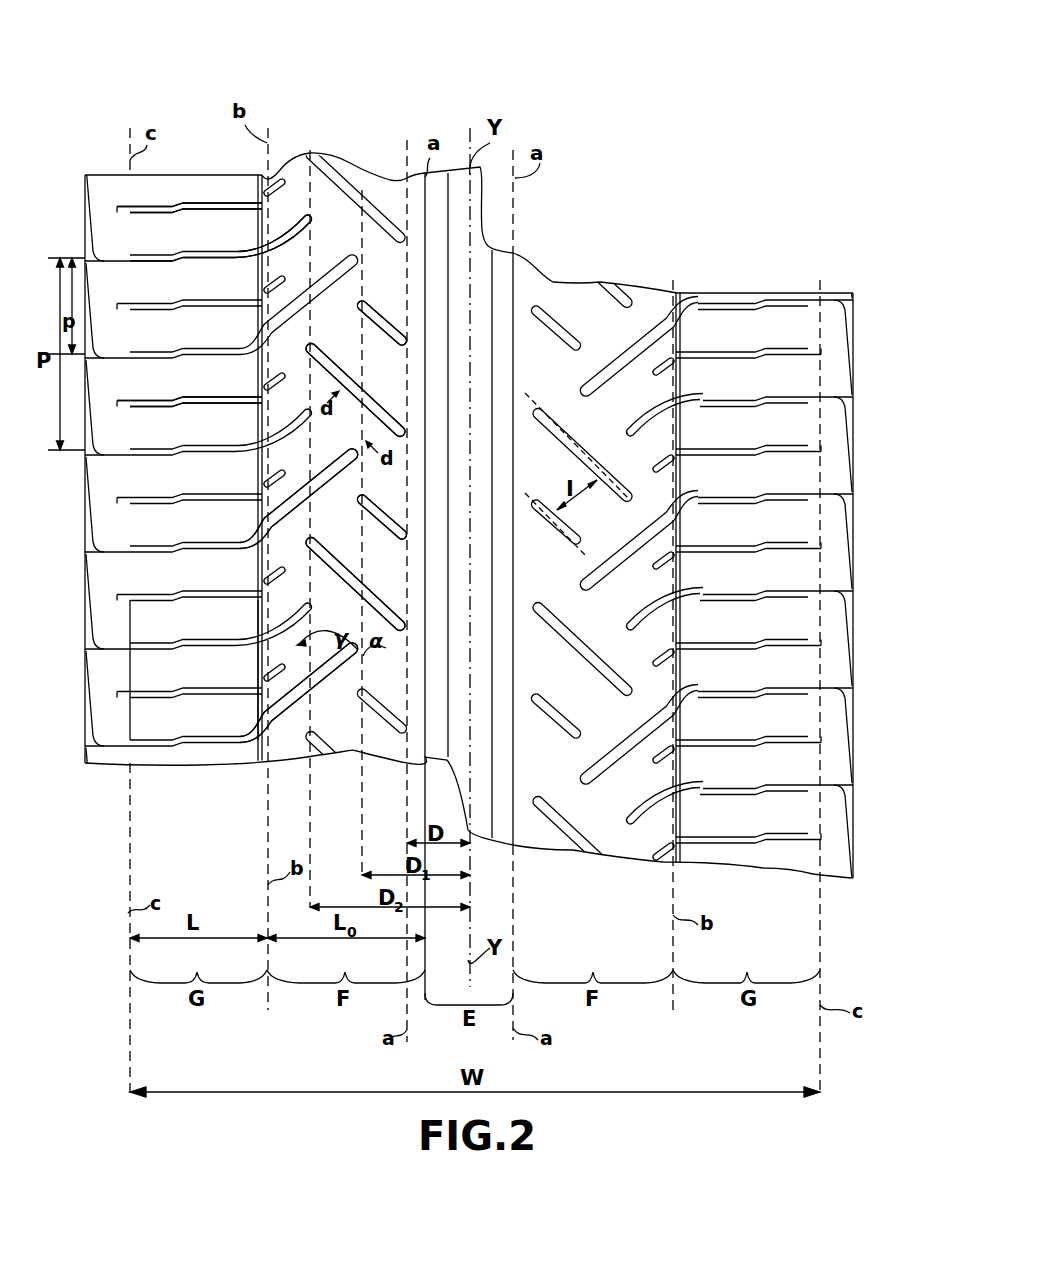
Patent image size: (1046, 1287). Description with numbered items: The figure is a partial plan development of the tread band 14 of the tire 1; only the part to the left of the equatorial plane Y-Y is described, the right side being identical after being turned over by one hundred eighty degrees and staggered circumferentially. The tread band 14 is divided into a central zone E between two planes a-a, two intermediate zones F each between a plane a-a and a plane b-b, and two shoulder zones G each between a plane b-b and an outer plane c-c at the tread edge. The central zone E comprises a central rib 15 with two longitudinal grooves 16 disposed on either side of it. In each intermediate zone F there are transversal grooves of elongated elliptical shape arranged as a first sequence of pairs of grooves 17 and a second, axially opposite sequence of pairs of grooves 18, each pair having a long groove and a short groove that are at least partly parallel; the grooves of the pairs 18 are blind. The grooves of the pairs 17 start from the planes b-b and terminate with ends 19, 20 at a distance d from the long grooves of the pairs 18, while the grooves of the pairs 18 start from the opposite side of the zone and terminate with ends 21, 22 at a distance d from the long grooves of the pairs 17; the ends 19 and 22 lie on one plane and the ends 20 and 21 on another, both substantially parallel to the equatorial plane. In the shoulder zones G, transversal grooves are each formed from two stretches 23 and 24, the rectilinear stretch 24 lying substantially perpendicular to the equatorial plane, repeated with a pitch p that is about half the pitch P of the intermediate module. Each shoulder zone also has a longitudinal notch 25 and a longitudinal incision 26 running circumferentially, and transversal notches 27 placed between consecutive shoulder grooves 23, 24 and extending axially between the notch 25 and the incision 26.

The tire 1 is at (595, 89).
The tread band 14 is at (670, 201).
The central rib 15 is at (481, 300).
The longitudinal grooves 16 is at (437, 232).
The pairs of grooves of the first sequence 17 is at (366, 426).
The pairs of grooves of the second sequence 18 is at (362, 365).
The end of long groove of pair 17 19 is at (368, 250).
The end of short groove of pair 17 20 is at (312, 219).
The end of long groove of pair 18 21 is at (320, 543).
The end of short groove of pair 18 22 is at (360, 308).
The first stretch of shoulder transversal groove 23 is at (205, 737).
The rectilinear stretch of shoulder transversal groove 24 is at (166, 737).
The longitudinal notch 25 is at (130, 285).
The longitudinal incision 26 is at (262, 225).
The transversal notches 27 is at (155, 397).